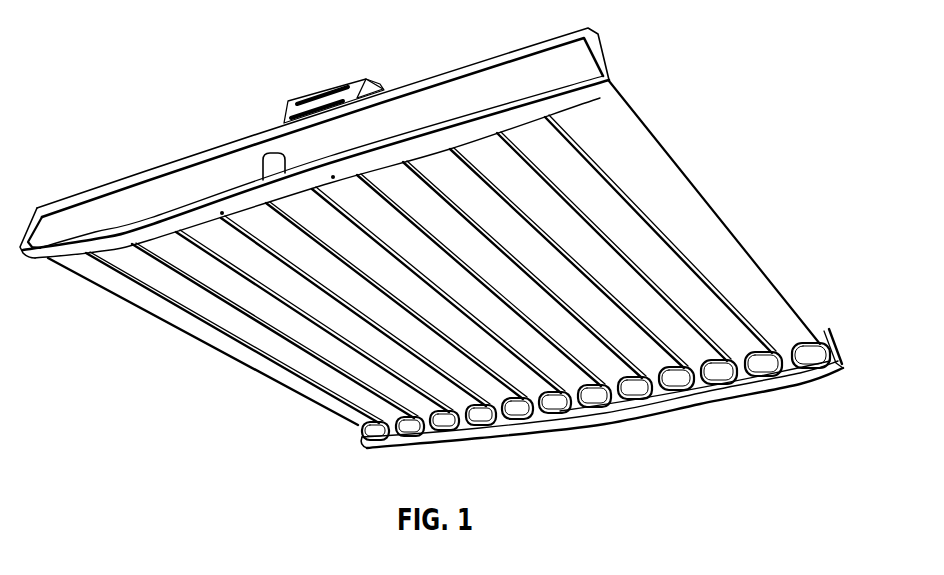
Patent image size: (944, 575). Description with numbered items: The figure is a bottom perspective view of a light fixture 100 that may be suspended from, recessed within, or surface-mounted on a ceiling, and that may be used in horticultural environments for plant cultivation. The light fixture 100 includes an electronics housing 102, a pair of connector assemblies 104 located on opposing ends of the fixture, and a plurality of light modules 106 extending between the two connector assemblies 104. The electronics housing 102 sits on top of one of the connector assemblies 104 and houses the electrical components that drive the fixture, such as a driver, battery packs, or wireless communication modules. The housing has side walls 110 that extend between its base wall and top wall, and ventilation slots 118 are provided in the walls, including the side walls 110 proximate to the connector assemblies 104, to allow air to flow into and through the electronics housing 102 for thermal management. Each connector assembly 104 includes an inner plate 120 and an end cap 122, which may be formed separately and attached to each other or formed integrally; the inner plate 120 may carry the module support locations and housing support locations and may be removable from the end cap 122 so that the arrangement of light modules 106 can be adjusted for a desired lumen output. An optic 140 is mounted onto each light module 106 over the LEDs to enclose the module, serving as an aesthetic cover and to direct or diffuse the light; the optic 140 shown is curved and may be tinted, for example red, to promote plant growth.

The light fixture 100 is at (126, 61).
The electronics housing 102 is at (292, 101).
The connector assembly 104 is at (584, 30).
The light module 106 is at (652, 138).
The side wall 110 is at (288, 121).
The ventilation slot 118 is at (345, 87).
The inner plate 120 is at (618, 402).
The end cap 122 is at (113, 182).
The optic 140 is at (267, 332).